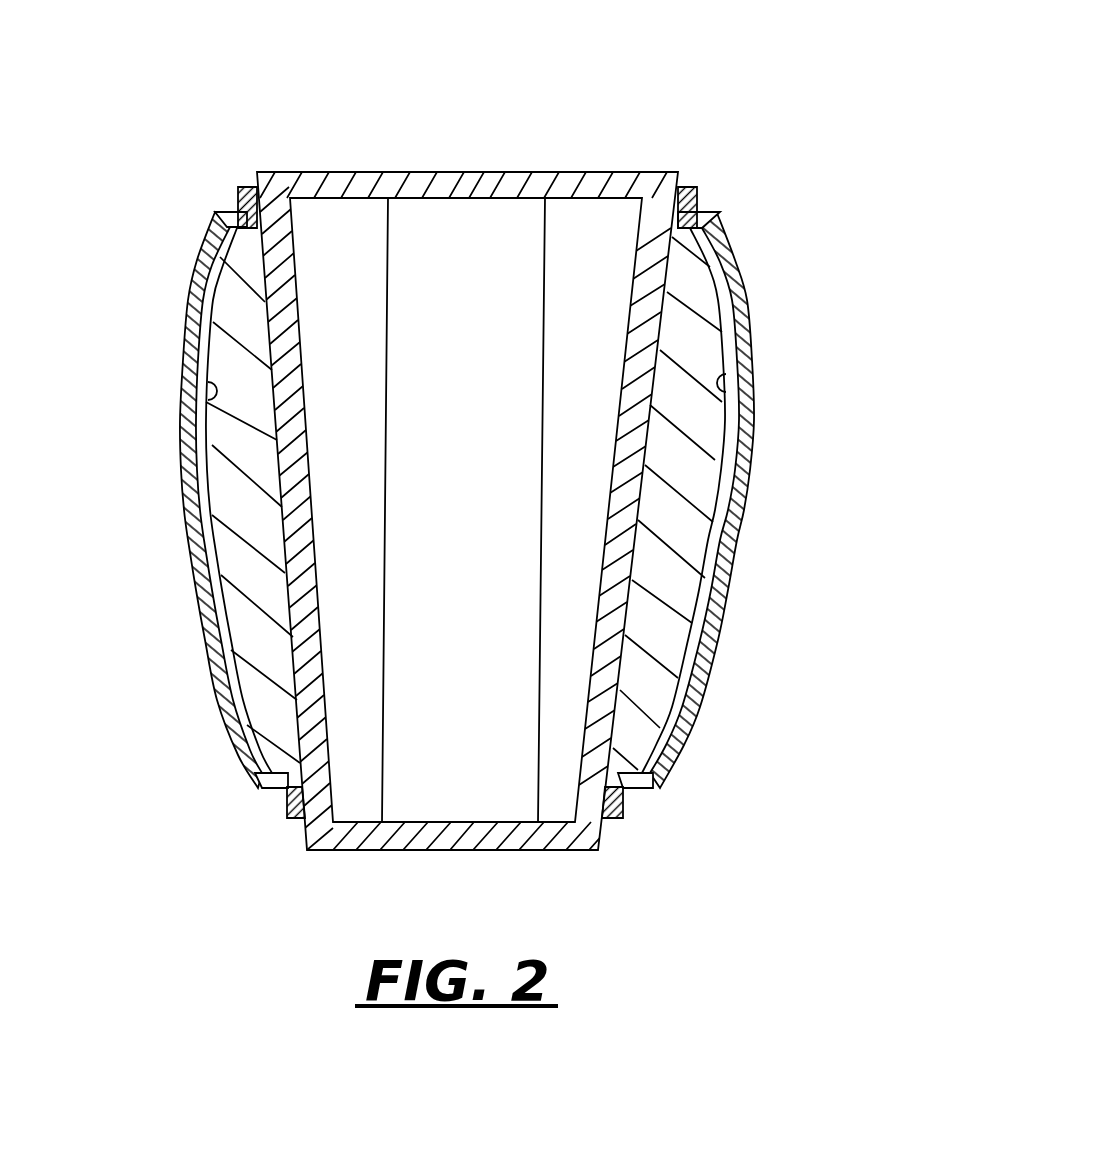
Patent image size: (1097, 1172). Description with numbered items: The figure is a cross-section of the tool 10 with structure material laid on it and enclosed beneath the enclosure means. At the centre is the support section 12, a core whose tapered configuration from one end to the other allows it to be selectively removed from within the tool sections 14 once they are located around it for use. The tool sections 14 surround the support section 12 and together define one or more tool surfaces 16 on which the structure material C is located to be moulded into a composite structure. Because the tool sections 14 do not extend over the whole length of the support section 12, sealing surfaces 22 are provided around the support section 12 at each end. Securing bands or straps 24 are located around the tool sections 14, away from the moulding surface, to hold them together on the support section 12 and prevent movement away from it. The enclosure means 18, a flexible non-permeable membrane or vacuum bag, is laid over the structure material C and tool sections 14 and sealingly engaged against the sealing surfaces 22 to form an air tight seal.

The tool 10 is at (679, 102).
The support section 12 is at (540, 838).
The tool sections 14 is at (232, 488).
The tool surfaces 16 is at (218, 407).
The enclosure means 18 is at (203, 262).
The sealing surfaces 22 is at (238, 192).
The securing bands or straps 24 is at (235, 223).
The structure material C is at (203, 351).